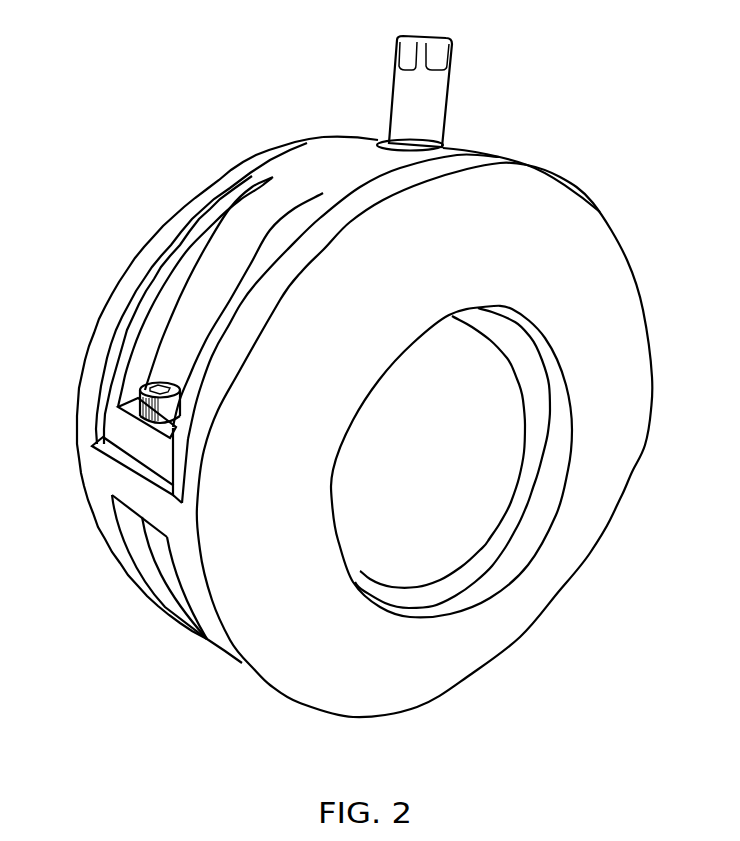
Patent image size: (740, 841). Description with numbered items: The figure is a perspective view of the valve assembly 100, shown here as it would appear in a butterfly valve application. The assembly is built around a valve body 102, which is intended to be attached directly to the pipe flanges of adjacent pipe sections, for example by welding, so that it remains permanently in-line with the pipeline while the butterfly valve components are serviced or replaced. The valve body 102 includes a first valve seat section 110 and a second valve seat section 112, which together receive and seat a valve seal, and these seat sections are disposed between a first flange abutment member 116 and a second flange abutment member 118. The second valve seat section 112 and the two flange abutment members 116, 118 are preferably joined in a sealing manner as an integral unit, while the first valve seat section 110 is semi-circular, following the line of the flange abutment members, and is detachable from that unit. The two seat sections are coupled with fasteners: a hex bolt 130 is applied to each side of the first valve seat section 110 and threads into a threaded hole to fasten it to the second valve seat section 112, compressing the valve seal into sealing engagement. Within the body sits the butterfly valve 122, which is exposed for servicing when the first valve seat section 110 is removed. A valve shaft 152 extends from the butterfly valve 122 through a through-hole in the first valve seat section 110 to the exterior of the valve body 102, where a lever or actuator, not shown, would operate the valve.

The valve assembly 100 is at (587, 67).
The valve body 102 is at (206, 636).
The first valve seat section 110 is at (347, 174).
The second valve seat section 112 is at (142, 517).
The first flange abutment member 116 is at (512, 249).
The second flange abutment member 118 is at (183, 220).
The butterfly valve 122 is at (434, 460).
The hex bolt 130 is at (140, 389).
The valve shaft 152 is at (387, 90).